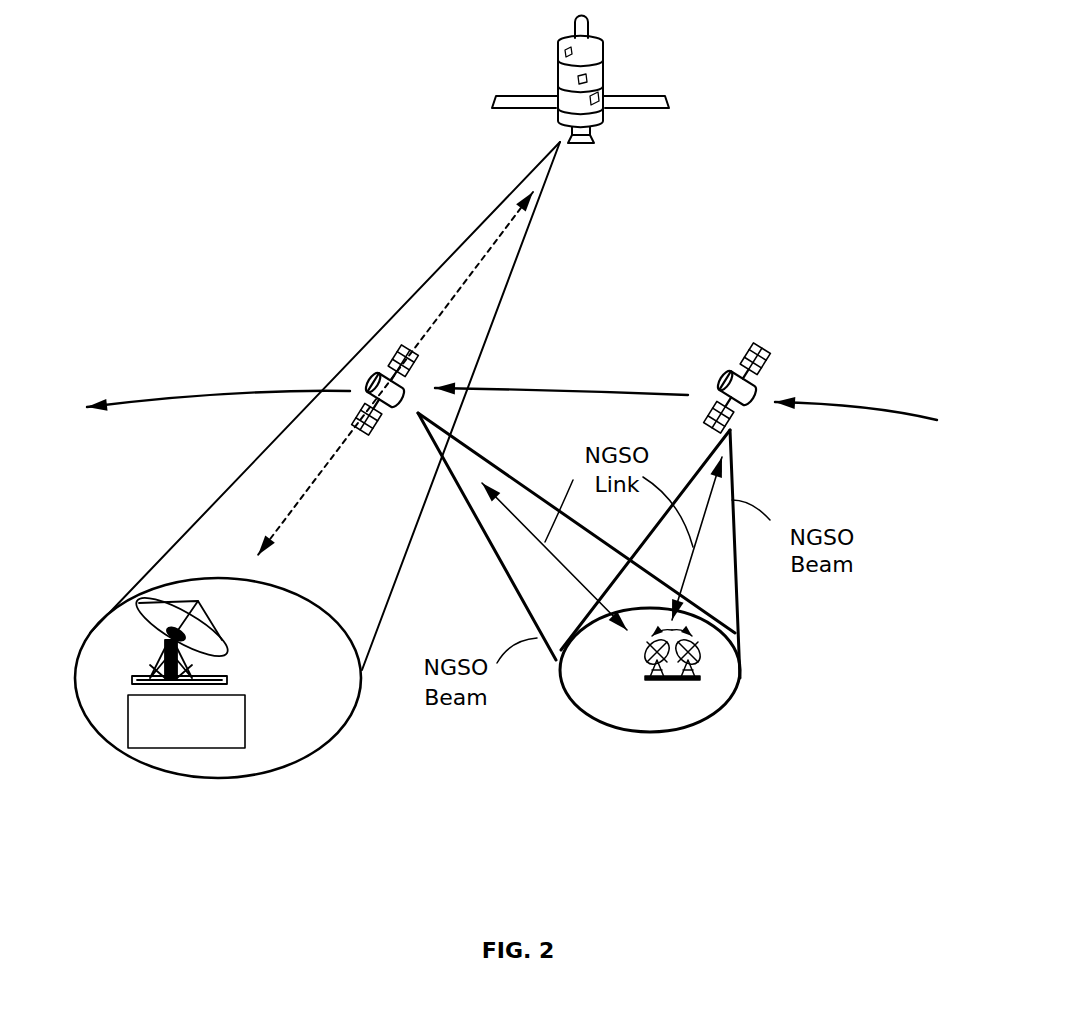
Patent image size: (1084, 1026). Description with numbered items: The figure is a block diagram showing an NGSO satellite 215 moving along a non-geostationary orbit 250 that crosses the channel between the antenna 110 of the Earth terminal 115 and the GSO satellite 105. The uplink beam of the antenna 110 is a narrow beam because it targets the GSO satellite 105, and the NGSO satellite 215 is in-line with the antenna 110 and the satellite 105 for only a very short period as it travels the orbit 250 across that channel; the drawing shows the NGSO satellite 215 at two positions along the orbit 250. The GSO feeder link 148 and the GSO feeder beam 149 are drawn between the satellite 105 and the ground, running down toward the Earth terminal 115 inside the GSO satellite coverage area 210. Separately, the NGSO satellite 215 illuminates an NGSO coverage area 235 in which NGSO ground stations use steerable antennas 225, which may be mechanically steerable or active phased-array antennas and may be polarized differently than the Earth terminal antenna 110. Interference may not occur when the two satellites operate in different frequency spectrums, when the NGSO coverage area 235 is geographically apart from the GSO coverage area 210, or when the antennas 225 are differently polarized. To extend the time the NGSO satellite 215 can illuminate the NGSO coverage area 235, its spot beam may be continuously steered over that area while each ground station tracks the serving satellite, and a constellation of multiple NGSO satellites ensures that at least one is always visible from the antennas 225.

The GSO satellite 105 is at (585, 80).
The antenna 110 is at (164, 636).
The Earth terminal 115 is at (220, 669).
The GSO feeder link 148 is at (507, 228).
The GSO feeder beam 149 is at (500, 208).
The GSO satellite coverage area 210 is at (298, 748).
The NGSO satellite 215 is at (620, 368).
The antennas 225 is at (702, 678).
The NGSO coverage area 235 is at (665, 713).
The non-geostationary orbit 250 is at (192, 392).